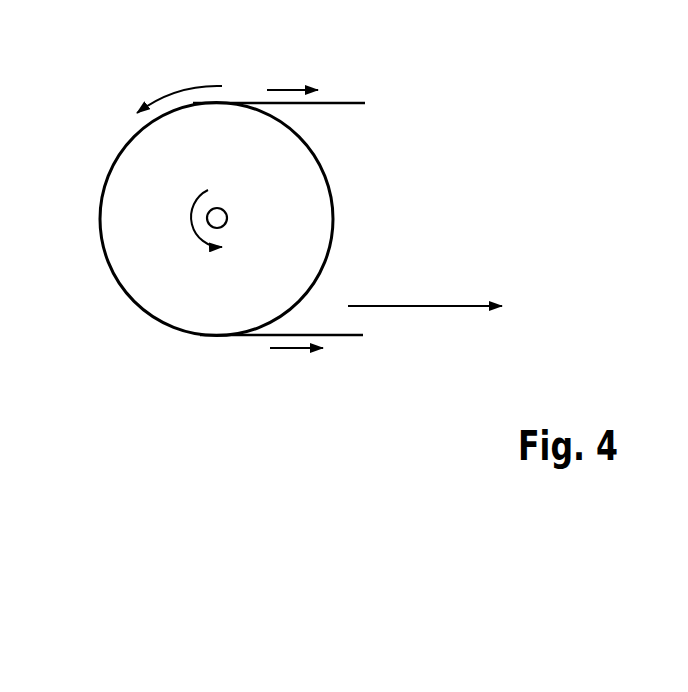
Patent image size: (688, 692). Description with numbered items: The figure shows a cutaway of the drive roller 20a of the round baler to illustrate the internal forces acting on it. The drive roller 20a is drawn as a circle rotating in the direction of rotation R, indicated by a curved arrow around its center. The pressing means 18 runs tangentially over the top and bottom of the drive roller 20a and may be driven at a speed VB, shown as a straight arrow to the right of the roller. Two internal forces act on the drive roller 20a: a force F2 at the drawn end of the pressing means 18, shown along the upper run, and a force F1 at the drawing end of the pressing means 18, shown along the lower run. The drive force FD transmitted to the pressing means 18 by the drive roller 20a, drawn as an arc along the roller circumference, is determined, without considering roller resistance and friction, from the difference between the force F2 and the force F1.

The drive roller 20a is at (135, 175).
The direction of rotation R is at (187, 218).
The pressing means 18 is at (348, 337).
The drive force FD is at (175, 90).
The force at the drawn end of the pressing means F2 is at (292, 88).
The force at the drawing end of the pressing means F1 is at (293, 350).
The speed VB is at (422, 303).